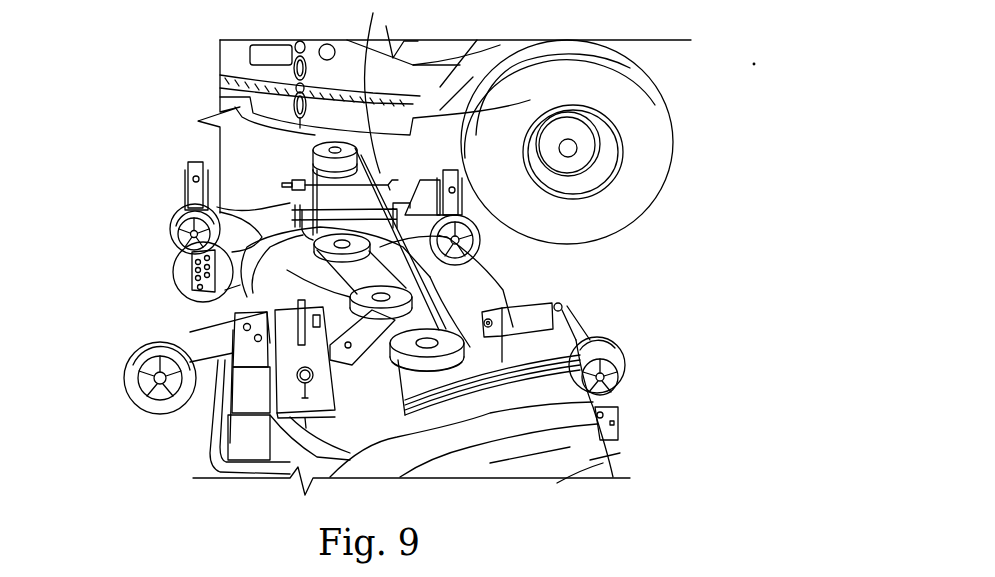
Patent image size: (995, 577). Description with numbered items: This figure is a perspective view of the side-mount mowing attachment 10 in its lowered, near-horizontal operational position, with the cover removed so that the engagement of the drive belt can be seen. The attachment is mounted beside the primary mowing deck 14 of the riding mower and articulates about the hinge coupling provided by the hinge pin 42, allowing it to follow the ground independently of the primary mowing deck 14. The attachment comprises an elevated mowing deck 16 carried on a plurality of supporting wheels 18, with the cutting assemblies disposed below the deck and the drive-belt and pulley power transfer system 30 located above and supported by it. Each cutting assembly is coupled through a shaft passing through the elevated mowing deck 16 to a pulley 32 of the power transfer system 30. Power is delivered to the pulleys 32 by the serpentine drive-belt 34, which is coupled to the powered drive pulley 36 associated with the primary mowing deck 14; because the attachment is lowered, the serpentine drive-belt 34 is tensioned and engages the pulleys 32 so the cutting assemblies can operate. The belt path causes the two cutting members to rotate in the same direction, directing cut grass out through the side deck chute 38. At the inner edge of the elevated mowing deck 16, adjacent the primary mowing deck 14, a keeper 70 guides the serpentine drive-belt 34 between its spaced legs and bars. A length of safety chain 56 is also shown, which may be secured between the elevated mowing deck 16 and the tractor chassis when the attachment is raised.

The side-mount mowing attachment 10 is at (590, 300).
The primary mowing deck 14 is at (245, 184).
The elevated mowing deck 16 is at (198, 423).
The supporting wheels 18 is at (122, 358).
The drive-belt and pulley power transfer system 30 is at (290, 273).
The pulley 32 is at (440, 290).
The serpentine drive-belt 34 is at (460, 268).
The powered drive pulley 36 is at (386, 26).
The side deck chute 38 is at (597, 453).
The hinge pin 42 is at (405, 190).
The safety chain 56 is at (300, 130).
The keeper 70 is at (280, 198).